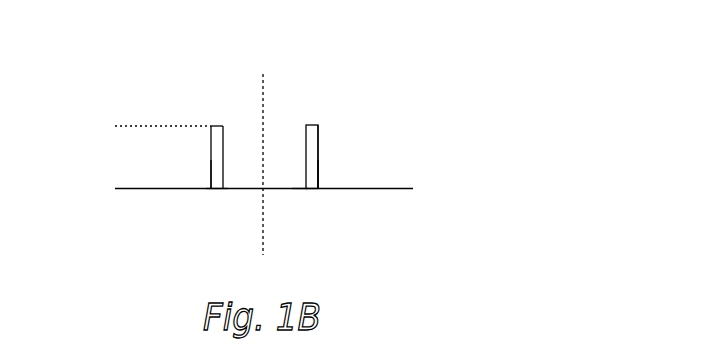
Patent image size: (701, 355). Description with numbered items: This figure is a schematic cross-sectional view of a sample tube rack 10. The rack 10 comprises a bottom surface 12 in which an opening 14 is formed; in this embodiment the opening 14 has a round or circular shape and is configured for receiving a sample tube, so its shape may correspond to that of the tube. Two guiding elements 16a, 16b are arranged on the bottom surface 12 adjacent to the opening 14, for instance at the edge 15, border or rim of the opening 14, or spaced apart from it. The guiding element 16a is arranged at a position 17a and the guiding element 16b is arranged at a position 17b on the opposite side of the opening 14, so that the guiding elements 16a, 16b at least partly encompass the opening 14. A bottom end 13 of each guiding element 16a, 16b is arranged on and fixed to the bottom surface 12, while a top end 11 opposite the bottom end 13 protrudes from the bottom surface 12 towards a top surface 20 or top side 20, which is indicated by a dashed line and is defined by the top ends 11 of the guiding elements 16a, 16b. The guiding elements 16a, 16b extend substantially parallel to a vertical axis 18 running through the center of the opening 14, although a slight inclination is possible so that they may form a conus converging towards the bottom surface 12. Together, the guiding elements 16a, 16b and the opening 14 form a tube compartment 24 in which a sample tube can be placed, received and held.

The sample tube rack 10 is at (313, 151).
The top end 11 is at (215, 122).
The bottom surface 12 is at (409, 188).
The bottom end 13 is at (212, 194).
The opening 14 is at (278, 184).
The edge 15 is at (300, 192).
The guiding element 16a is at (318, 142).
The guiding element 16b is at (208, 148).
The position 17a is at (322, 179).
The position 17b is at (208, 180).
The vertical axis 18 is at (264, 74).
The top surface 20 is at (129, 121).
The tube compartment 24 is at (245, 122).